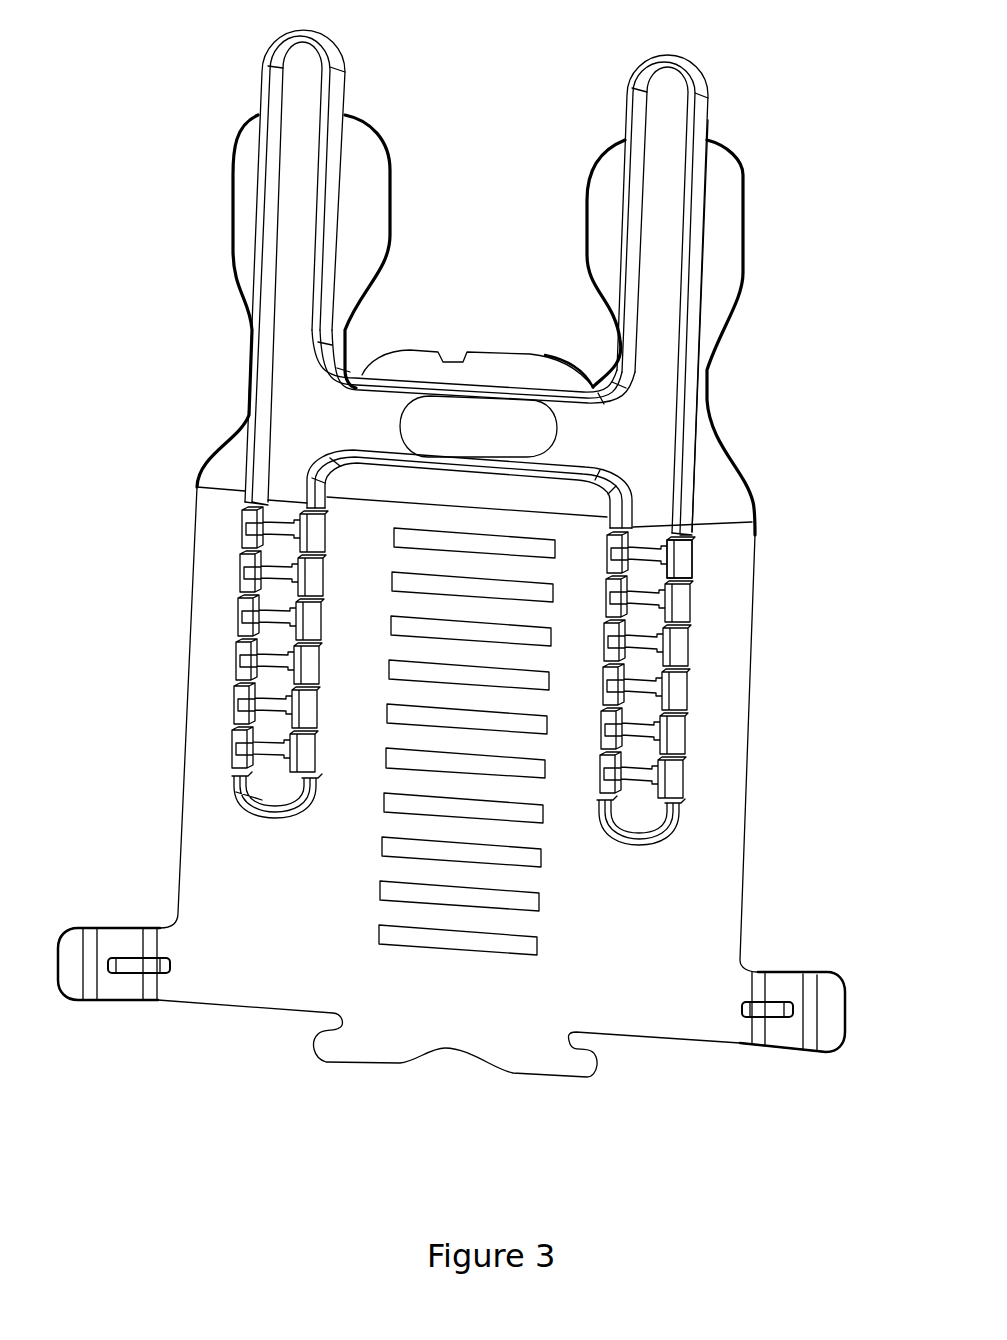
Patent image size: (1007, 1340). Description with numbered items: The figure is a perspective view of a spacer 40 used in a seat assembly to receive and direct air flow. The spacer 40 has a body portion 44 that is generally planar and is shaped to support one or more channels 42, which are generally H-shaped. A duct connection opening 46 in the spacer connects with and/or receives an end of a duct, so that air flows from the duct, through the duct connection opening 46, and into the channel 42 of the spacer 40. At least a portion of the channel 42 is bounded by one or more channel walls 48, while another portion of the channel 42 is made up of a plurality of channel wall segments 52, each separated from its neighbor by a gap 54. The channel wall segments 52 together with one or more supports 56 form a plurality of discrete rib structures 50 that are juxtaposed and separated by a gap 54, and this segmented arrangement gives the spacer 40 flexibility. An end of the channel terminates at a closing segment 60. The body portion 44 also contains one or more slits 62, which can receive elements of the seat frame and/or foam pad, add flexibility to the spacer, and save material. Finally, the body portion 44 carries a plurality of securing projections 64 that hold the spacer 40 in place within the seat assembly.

The spacer 40 is at (222, 66).
The channel 42 is at (663, 205).
The body portion 44 is at (650, 960).
The duct connection opening 46 is at (447, 408).
The channel wall 48 is at (327, 267).
The rib structure 50 is at (688, 563).
The channel wall segment 52 is at (680, 688).
The gap 54 is at (677, 758).
The support 56 is at (263, 660).
The closing segment 60 is at (240, 780).
The slit 62 is at (378, 941).
The securing projection 64 is at (128, 997).